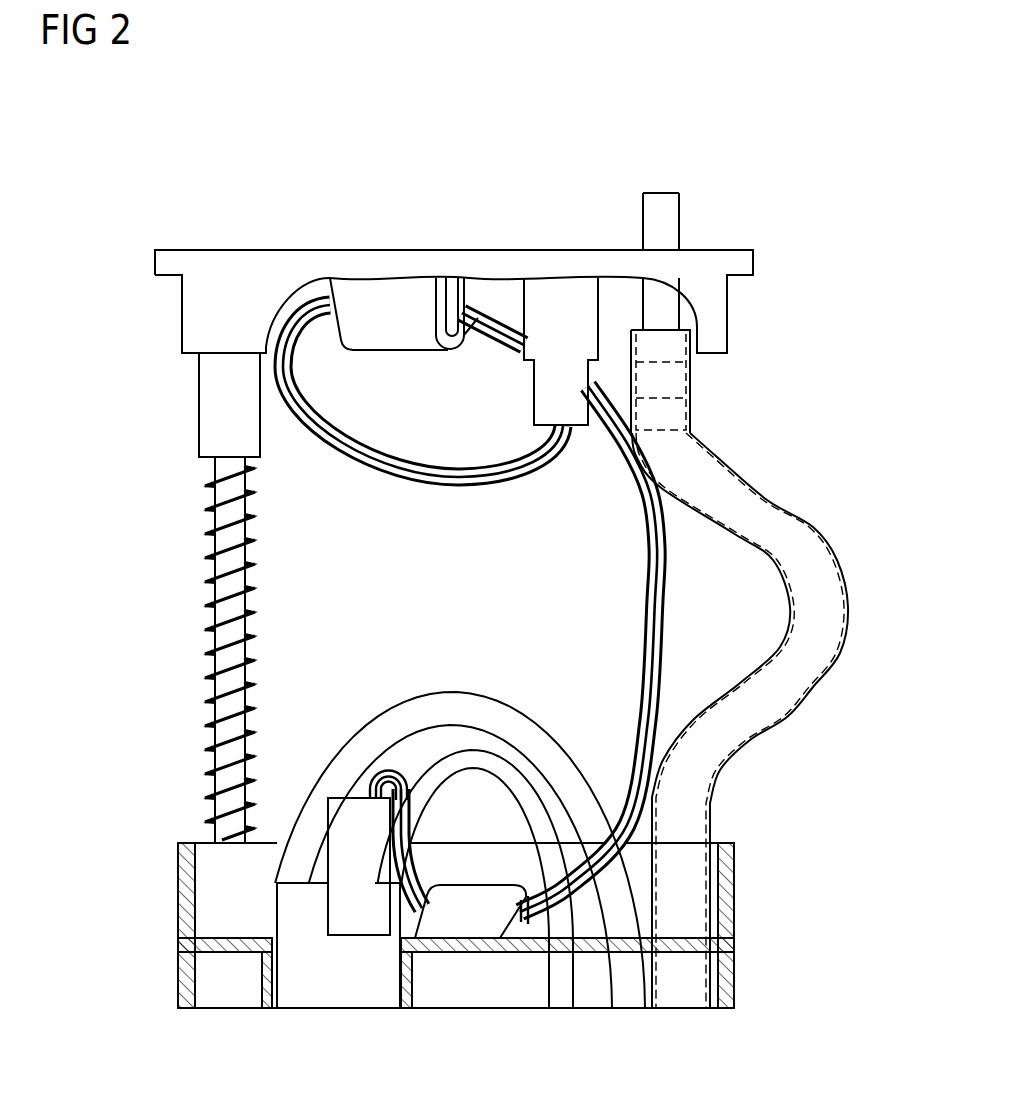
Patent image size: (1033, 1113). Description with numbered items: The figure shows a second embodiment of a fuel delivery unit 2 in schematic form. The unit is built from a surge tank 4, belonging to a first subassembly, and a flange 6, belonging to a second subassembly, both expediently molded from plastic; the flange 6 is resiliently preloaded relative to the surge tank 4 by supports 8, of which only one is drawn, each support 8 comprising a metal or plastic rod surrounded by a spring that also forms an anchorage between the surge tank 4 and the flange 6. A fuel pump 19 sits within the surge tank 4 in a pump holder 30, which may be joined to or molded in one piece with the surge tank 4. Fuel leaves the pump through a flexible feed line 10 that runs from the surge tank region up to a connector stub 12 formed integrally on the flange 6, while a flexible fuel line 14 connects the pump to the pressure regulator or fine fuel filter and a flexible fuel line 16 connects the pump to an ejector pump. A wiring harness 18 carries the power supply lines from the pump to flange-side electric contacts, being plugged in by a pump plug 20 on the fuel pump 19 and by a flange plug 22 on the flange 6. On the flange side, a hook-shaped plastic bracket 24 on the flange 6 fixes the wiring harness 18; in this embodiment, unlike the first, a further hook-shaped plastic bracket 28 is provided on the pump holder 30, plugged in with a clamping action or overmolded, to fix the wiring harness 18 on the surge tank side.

The fuel delivery unit 2 is at (826, 184).
The surge tank 4 is at (727, 891).
The flange 6 is at (255, 262).
The support 8 is at (178, 627).
The feed line 10 is at (835, 601).
The connector stub 12 is at (660, 387).
The fuel line 14 is at (353, 757).
The fuel line 16 is at (500, 765).
The wiring harness 18 is at (652, 603).
The fuel pump 19 is at (312, 977).
The pump plug 20 is at (367, 914).
The flange plug 22 is at (562, 302).
The plastic bracket 24 is at (395, 302).
The plastic bracket 28 is at (467, 914).
The pump holder 30 is at (535, 945).